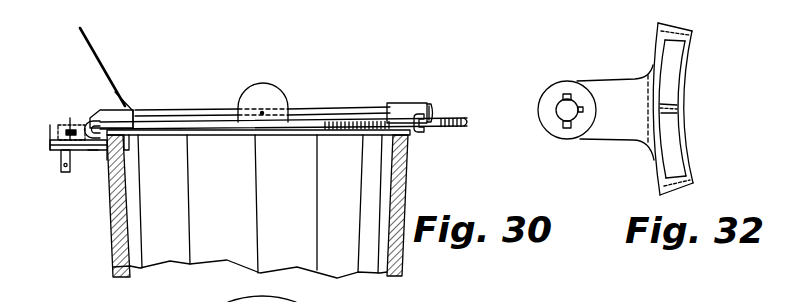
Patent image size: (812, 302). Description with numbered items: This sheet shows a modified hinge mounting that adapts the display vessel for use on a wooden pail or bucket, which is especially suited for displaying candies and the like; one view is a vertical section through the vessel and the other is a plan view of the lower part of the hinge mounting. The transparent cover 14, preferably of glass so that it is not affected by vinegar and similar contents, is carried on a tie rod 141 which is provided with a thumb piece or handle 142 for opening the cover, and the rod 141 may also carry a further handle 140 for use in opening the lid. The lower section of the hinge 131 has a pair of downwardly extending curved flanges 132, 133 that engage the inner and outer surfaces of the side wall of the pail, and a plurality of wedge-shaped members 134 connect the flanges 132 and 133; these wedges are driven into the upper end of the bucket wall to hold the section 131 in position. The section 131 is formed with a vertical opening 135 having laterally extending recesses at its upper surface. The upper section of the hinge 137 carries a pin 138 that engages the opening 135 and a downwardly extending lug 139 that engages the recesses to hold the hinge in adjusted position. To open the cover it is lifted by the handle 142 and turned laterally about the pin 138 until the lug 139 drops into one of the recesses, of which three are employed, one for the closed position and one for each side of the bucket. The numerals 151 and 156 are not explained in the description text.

In FIG. 30, the cover 14 is at (345, 122).
In FIG. 30, the lower section of the hinge 131 is at (93, 152).
In FIG. 32, the lower section of the hinge 131 is at (666, 31).
In FIG. 30, the curved flange 132 is at (104, 158).
In FIG. 32, the curved flange 132 is at (655, 43).
In FIG. 30, the curved flange 133 is at (127, 140).
In FIG. 32, the curved flange 133 is at (688, 71).
In FIG. 30, the wedge-shaped member 134 is at (137, 103).
In FIG. 32, the wedge-shaped member 134 is at (677, 178).
In FIG. 32, the vertical opening 135 is at (557, 122).
In FIG. 30, the upper section of the hinge 137 is at (84, 127).
In FIG. 30, the pin 138 is at (61, 167).
In FIG. 30, the lug 139 is at (88, 124).
In FIG. 30, the handle 140 is at (468, 110).
In FIG. 30, the tie rod 141 is at (200, 116).
In FIG. 30, the thumb piece or handle 142 is at (286, 101).
In FIG. 32, the arm 151 is at (615, 72).
In FIG. 32, the pins 156 is at (567, 94).